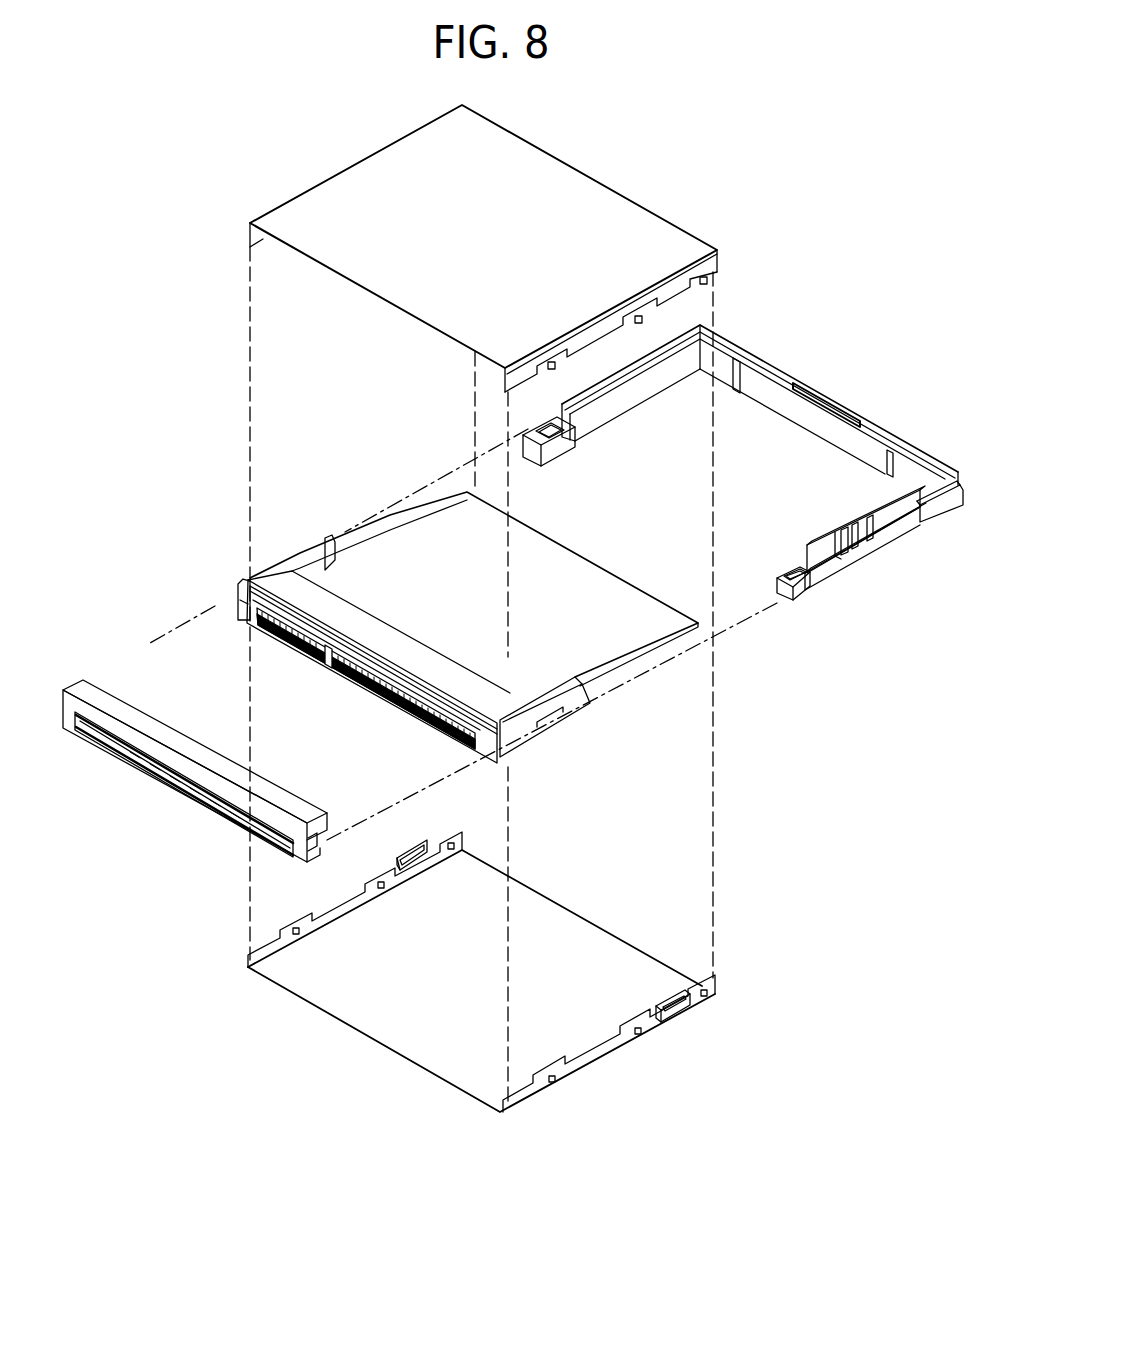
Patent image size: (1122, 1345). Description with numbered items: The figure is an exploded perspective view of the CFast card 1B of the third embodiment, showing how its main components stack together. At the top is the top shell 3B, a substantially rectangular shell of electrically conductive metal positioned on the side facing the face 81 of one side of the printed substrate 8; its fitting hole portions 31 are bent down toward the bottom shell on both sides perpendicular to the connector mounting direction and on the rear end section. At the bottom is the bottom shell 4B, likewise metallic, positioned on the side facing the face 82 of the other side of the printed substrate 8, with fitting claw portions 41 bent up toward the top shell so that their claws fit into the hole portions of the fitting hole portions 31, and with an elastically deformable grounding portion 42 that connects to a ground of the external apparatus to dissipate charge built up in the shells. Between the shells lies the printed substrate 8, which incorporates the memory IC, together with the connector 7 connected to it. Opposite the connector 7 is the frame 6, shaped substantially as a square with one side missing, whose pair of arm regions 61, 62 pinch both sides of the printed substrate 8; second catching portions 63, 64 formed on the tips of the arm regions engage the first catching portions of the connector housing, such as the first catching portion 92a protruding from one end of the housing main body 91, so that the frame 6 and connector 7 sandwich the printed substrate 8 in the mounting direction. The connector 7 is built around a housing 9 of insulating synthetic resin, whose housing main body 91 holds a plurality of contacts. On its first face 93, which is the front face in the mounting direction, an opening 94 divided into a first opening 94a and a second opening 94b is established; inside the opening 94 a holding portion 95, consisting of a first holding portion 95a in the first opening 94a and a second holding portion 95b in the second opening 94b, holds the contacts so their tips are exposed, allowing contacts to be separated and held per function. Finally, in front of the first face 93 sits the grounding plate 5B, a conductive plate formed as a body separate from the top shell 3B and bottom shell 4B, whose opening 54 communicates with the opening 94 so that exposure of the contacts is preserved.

The CFast card 1B is at (163, 288).
The top shell 3B is at (380, 178).
The fitting hole portions 31 is at (718, 284).
The bottom shell 4B is at (418, 1048).
The fitting claw portions 41 is at (455, 835).
The grounding portion 42 is at (680, 1010).
The grounding plate 5B is at (123, 702).
The opening 54 is at (128, 745).
The frame 6 is at (780, 368).
The arm region 61 is at (893, 550).
The arm region 62 is at (668, 385).
The second catching portion 63 is at (805, 600).
The second catching portion 64 is at (558, 448).
The connector 7 is at (260, 550).
The printed substrate 8 is at (665, 665).
The face 81 is at (643, 598).
The face 82 is at (604, 560).
The housing 9 is at (323, 595).
The housing main body 91 is at (455, 673).
The first catching portion 92a is at (572, 725).
The first face 93 is at (240, 598).
The opening 94 is at (434, 748).
The first opening 94a is at (374, 714).
The second opening 94b is at (258, 650).
The holding portion 95 is at (250, 687).
The first holding portion 95a is at (333, 665).
The second holding portion 95b is at (302, 655).